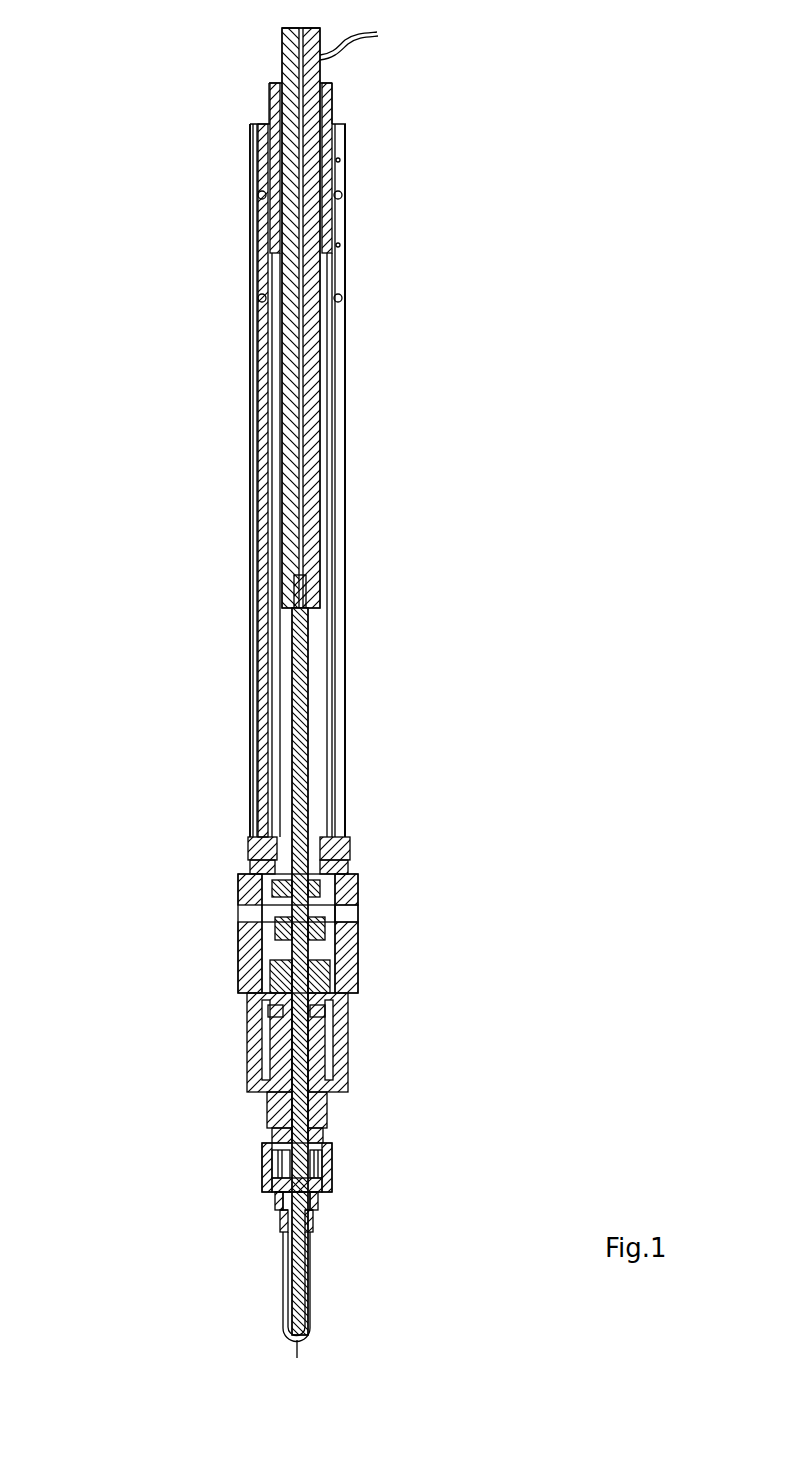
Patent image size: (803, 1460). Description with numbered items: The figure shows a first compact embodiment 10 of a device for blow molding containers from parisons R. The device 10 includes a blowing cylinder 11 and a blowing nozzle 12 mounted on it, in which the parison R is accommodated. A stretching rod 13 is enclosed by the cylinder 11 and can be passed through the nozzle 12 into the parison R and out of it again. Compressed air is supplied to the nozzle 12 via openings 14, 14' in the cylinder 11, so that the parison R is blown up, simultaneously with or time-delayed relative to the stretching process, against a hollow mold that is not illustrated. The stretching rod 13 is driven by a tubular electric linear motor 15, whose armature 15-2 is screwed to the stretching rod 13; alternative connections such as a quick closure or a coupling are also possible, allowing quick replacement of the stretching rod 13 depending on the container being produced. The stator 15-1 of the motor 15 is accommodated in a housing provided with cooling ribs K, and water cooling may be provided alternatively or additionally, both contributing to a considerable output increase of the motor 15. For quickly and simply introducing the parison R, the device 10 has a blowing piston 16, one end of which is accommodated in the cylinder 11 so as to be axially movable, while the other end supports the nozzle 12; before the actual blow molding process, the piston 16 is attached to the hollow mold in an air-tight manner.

The compact embodiment of a device 10 is at (503, 231).
The tubular electric linear motor 15 is at (165, 299).
The stator 15-1 is at (274, 205).
The armature 15-2 is at (290, 455).
The cooling ribs K is at (345, 533).
The stretching rod 13 is at (295, 656).
The opening 14 is at (239, 915).
The opening 14' is at (407, 929).
The blowing cylinder 11 is at (243, 978).
The blowing piston 16 is at (315, 1013).
The blowing nozzle 12 is at (262, 1178).
The parison R is at (310, 1282).